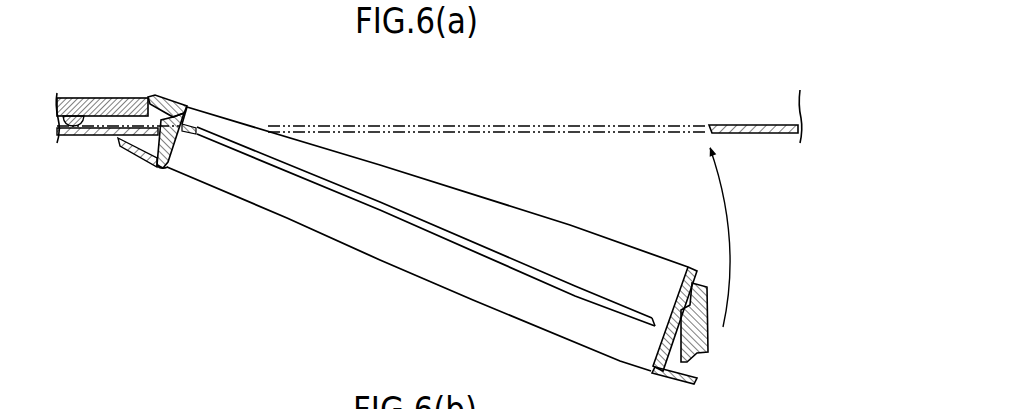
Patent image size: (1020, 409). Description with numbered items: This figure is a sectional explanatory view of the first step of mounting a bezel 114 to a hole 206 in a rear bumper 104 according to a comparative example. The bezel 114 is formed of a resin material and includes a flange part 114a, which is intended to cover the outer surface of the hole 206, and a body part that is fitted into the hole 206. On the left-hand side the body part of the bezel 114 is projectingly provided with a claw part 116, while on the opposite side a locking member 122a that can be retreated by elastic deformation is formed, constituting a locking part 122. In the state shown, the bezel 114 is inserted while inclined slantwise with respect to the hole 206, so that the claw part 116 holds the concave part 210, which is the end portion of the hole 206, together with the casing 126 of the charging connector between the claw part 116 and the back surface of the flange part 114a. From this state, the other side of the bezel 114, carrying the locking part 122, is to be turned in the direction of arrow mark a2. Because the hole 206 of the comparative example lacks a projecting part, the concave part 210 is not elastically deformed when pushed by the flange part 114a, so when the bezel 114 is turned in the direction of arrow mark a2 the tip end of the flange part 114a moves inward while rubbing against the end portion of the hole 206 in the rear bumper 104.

The rear bumper 104 is at (752, 125).
The bezel 114 is at (487, 185).
The flange part 114a is at (120, 136).
The claw part 116 is at (178, 95).
The locking part 122 is at (699, 366).
The locking member 122a is at (707, 331).
The casing 126 is at (122, 97).
The hole 206 is at (522, 128).
The concave part 210 is at (140, 148).
The arrow mark a2 is at (728, 223).